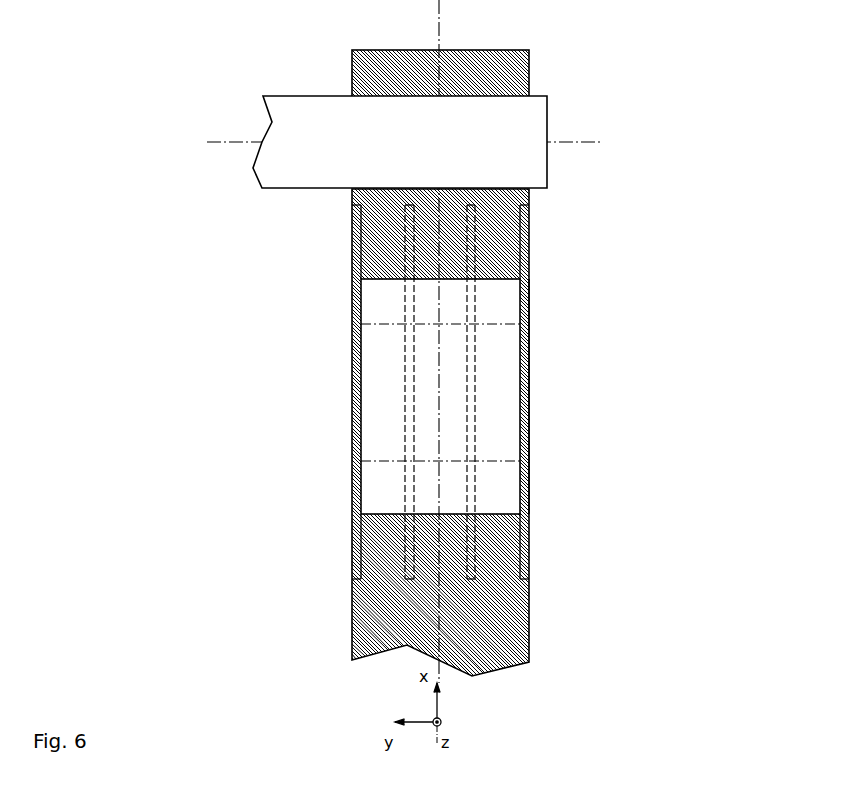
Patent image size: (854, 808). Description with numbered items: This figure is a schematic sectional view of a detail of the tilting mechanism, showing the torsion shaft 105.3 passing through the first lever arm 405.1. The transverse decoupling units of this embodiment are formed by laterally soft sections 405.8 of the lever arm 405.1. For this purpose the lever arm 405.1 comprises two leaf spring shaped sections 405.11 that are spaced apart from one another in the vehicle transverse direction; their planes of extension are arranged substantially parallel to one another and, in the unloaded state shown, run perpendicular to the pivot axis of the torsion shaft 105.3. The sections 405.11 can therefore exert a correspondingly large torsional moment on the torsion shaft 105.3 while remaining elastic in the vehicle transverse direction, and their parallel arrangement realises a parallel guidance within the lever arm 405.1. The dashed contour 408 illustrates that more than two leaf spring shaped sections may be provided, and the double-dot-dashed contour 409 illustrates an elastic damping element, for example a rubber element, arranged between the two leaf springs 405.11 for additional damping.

The torsion shaft 105.3 is at (550, 122).
The lever arm 405.1 is at (548, 277).
The leaf spring shaped sections 405.11 is at (532, 373).
The laterally soft sections 405.8 is at (533, 425).
The dashed contour 408 is at (473, 492).
The double-dot-dashed contour 409 is at (378, 463).